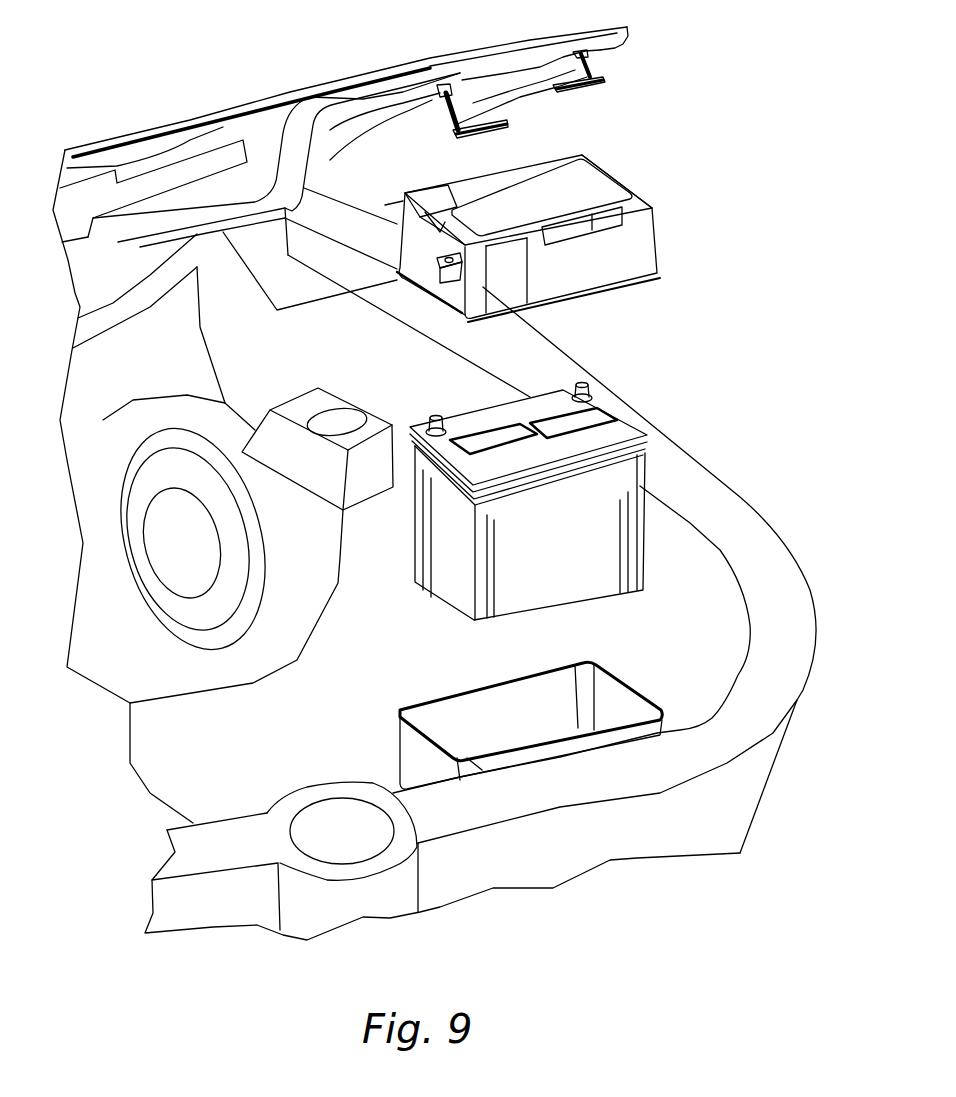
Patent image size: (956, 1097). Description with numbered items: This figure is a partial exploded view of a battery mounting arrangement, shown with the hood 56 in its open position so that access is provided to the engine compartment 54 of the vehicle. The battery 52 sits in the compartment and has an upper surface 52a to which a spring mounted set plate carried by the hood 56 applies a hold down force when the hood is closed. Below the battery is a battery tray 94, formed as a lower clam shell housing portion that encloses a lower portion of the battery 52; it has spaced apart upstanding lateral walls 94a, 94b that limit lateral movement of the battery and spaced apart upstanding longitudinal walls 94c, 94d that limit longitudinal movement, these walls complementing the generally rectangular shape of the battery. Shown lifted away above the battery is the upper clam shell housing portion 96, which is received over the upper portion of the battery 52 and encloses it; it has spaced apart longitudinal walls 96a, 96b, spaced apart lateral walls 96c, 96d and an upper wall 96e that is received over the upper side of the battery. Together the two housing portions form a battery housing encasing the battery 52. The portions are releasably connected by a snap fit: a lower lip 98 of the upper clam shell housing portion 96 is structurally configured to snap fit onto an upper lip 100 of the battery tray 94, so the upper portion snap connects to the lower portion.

The hood 56 is at (340, 83).
The upper clam shell housing portion 96 is at (531, 236).
The longitudinal wall 96a is at (465, 192).
The longitudinal wall 96b is at (655, 268).
The lateral wall 96c is at (625, 195).
The lateral wall 96d is at (413, 257).
The upper wall 96e is at (513, 180).
The lower lip 98 is at (531, 303).
The battery 52 is at (576, 493).
The upper surface 52a is at (487, 422).
The engine compartment 54 is at (680, 601).
The battery tray 94 is at (497, 771).
The lateral wall 94a is at (457, 708).
The lateral wall 94b is at (553, 752).
The longitudinal wall 94c is at (620, 703).
The longitudinal wall 94d is at (410, 757).
The upper lip 100 is at (543, 663).